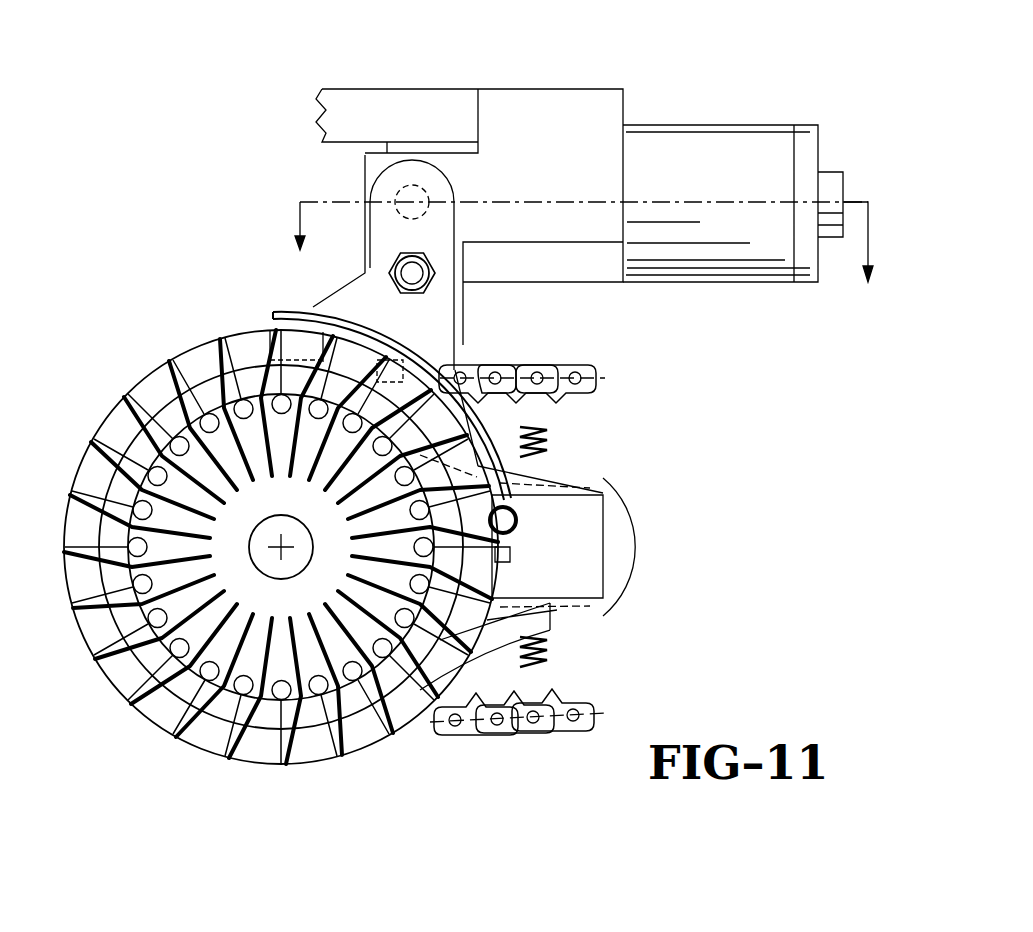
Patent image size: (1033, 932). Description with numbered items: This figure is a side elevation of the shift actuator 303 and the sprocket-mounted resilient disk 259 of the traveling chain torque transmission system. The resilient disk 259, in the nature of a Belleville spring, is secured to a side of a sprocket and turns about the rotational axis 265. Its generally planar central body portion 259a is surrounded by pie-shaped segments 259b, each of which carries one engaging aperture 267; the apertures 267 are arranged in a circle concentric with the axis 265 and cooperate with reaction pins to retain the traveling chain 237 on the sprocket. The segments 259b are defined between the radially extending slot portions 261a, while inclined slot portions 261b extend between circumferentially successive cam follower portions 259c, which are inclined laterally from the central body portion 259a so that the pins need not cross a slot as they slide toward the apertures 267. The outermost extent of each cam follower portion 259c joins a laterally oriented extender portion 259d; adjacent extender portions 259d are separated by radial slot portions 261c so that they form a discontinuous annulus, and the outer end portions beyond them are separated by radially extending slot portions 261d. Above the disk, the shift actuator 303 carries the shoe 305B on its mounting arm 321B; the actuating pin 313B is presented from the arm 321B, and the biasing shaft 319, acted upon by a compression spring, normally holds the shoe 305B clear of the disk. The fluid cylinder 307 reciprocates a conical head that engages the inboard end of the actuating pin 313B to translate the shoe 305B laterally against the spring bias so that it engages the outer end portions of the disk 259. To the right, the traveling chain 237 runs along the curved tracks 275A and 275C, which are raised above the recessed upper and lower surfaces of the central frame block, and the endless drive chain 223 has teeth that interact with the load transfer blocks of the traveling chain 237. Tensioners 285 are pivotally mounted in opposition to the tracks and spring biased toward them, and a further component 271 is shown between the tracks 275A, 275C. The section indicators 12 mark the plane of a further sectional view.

The section line 12 is at (584, 256).
The endless drive chain 223 is at (510, 363).
The traveling chain 237 is at (567, 612).
The resilient disk 259 is at (148, 370).
The central body portion 259a is at (318, 507).
The pie-shaped segment 259b is at (155, 470).
The cam follower portion 259c is at (140, 680).
The extender portion 259d is at (340, 742).
The slot portion 261a is at (175, 628).
The inclined slot portion 261b is at (268, 745).
The slot portion 261c is at (398, 742).
The radially extending slot portion 261d is at (150, 690).
The rotational axis 265 is at (283, 550).
The engaging apertures 267 is at (130, 540).
The roller 271 is at (620, 566).
The curved track 275A is at (585, 478).
The curved track 275C is at (605, 608).
The tensioner 285 is at (550, 467).
The shift actuator 303 is at (648, 111).
The shoe 305B is at (264, 311).
The fluid cylinder 307 is at (712, 162).
The actuating pin 313B is at (417, 193).
The biasing shaft 319 is at (417, 275).
The mounting arm 321B is at (423, 312).